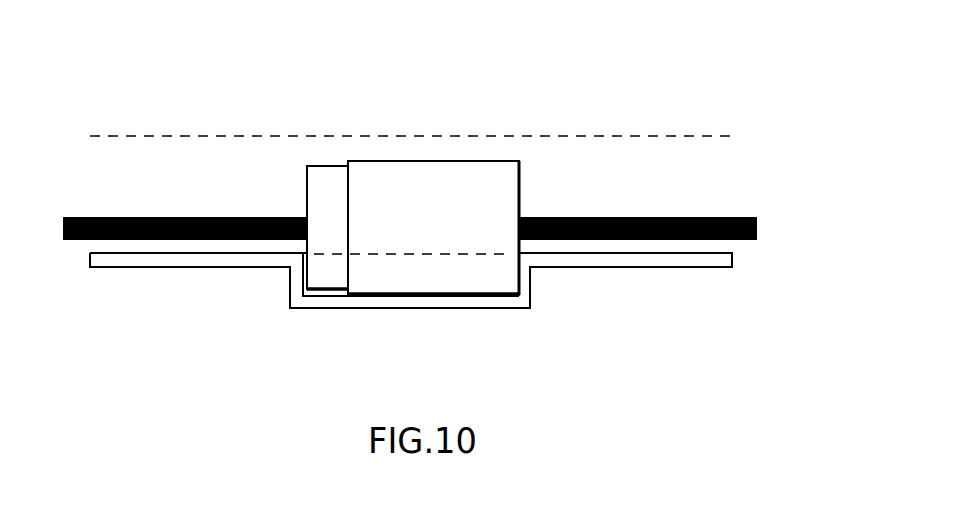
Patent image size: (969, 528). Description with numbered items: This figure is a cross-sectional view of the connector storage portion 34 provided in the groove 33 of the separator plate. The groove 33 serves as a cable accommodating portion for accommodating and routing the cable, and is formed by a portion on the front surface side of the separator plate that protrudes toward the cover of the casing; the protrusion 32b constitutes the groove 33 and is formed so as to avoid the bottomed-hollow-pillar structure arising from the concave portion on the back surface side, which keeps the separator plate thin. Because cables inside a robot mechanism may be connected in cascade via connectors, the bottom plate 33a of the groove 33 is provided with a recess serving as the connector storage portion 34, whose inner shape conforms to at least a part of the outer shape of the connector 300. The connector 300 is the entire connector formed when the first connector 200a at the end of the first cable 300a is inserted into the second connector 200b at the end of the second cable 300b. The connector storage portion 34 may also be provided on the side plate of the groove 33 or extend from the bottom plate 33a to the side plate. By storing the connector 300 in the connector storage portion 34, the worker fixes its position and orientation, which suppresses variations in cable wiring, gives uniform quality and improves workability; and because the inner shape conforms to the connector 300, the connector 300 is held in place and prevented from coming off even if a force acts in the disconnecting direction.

The first connector 200a is at (138, 217).
The second connector 200b is at (706, 217).
The protrusion 32b is at (215, 135).
The connector 300 is at (413, 157).
The first cable 300a is at (329, 183).
The second cable 300b is at (491, 183).
The groove 33 is at (588, 187).
The bottom plate 33a is at (677, 253).
The connector storage portion 34 is at (421, 277).